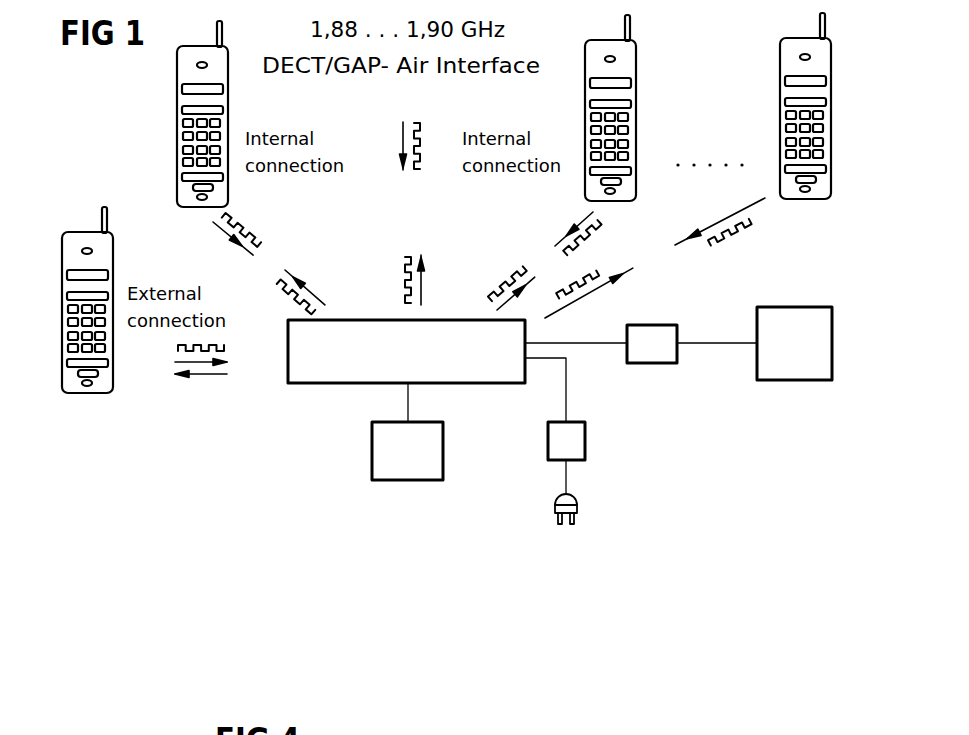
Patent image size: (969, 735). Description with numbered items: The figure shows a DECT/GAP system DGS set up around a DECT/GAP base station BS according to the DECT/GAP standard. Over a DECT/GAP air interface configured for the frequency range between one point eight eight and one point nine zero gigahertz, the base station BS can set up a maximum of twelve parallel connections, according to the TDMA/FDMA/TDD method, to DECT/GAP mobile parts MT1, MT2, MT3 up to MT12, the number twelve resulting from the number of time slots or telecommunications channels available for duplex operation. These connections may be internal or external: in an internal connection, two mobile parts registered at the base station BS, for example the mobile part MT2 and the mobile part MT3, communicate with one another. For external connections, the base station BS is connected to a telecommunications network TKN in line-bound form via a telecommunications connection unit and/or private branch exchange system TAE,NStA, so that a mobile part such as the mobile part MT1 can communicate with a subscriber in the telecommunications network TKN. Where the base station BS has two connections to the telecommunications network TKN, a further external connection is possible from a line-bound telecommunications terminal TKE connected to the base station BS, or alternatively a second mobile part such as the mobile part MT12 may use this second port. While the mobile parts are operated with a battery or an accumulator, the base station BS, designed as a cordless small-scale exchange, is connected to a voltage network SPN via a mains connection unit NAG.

The DECT/GAP system DGS is at (255, 415).
The mobile part MT1 is at (80, 233).
The mobile part MT2 is at (180, 97).
The mobile part MT3 is at (632, 128).
The mobile part MT12 is at (786, 61).
The base station BS is at (330, 385).
The telecommunications terminal TKE is at (408, 482).
The mains connection unit NAG is at (547, 440).
The voltage network SPN is at (566, 530).
The telecommunications connection unit and private branch exchange system TAE,NStA is at (655, 365).
The telecommunications network TKN is at (792, 382).